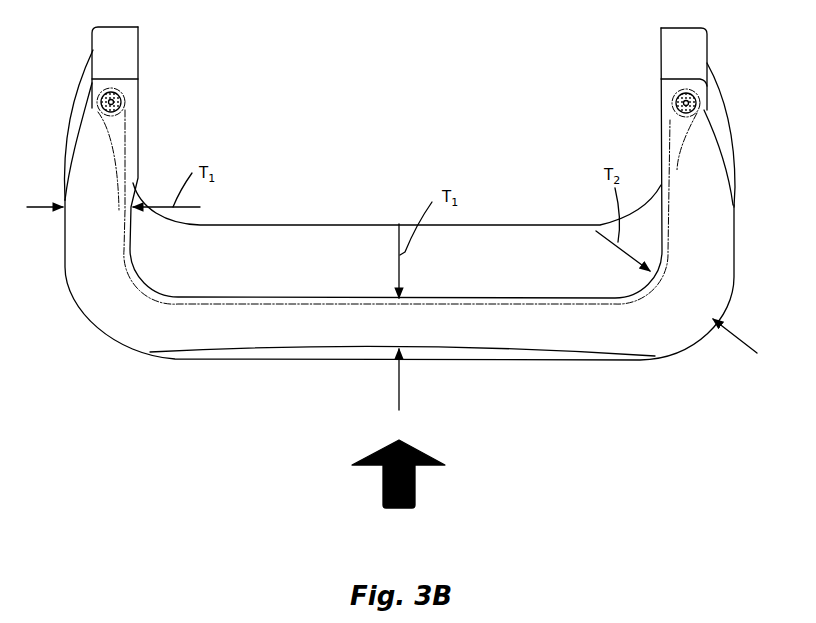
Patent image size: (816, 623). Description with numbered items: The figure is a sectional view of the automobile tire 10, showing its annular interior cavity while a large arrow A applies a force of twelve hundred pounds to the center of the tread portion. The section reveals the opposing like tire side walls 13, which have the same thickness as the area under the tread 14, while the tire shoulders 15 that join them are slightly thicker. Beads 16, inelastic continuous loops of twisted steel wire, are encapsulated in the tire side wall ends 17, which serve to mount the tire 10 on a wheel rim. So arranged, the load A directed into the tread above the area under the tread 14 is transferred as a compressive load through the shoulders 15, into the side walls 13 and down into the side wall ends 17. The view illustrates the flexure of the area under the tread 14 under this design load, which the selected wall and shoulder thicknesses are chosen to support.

The automobile tire 10 is at (436, 95).
The tire side walls 13 is at (90, 257).
The area under the tread 14 is at (384, 337).
The tire shoulders 15 is at (117, 313).
The beads 16 is at (110, 97).
The tire side wall ends 17 is at (134, 133).
The applied load A is at (415, 480).